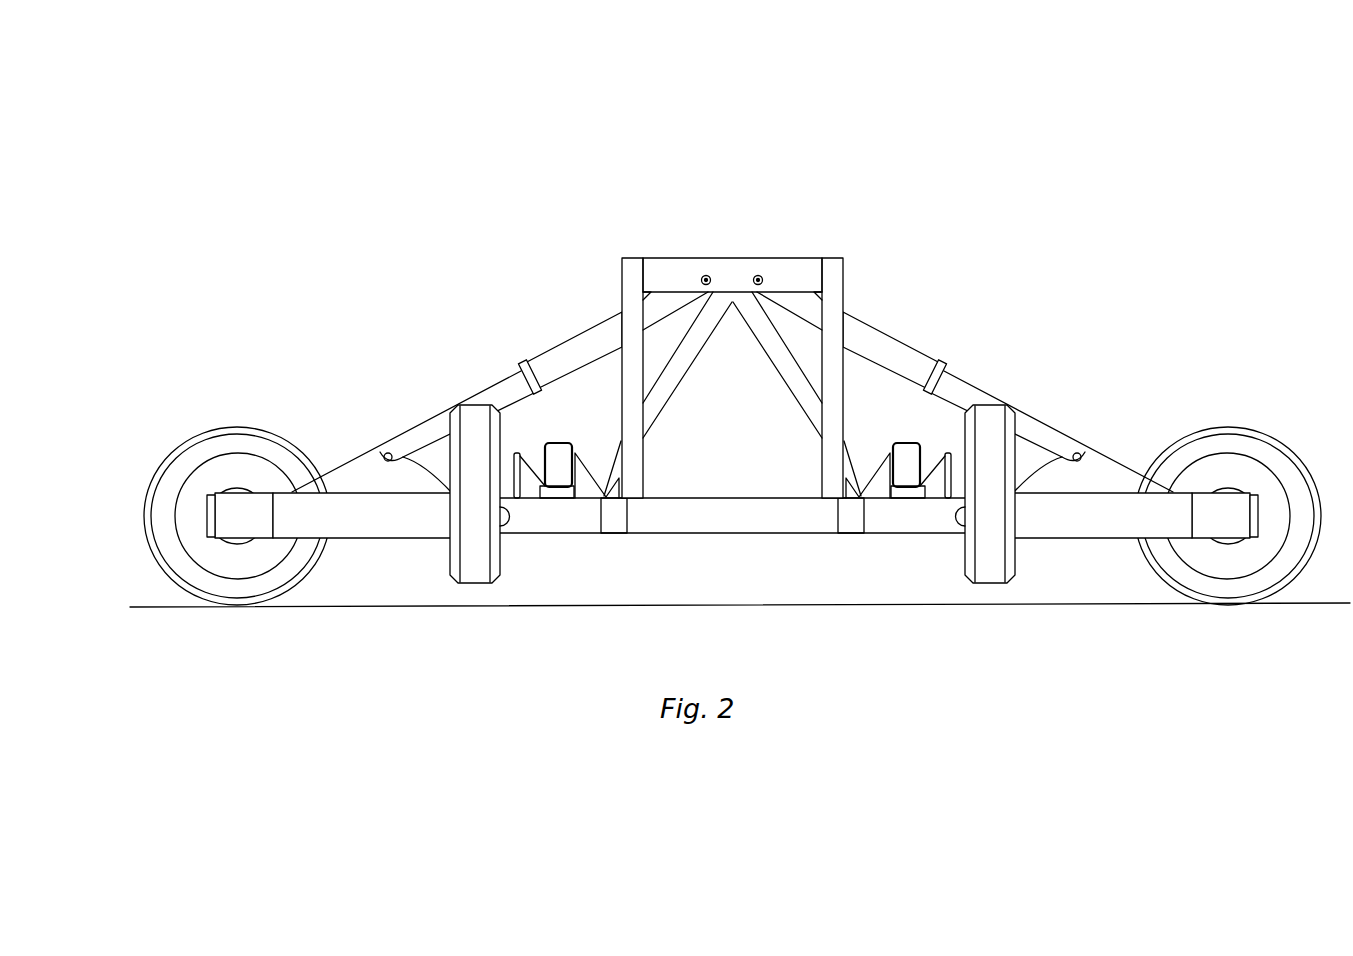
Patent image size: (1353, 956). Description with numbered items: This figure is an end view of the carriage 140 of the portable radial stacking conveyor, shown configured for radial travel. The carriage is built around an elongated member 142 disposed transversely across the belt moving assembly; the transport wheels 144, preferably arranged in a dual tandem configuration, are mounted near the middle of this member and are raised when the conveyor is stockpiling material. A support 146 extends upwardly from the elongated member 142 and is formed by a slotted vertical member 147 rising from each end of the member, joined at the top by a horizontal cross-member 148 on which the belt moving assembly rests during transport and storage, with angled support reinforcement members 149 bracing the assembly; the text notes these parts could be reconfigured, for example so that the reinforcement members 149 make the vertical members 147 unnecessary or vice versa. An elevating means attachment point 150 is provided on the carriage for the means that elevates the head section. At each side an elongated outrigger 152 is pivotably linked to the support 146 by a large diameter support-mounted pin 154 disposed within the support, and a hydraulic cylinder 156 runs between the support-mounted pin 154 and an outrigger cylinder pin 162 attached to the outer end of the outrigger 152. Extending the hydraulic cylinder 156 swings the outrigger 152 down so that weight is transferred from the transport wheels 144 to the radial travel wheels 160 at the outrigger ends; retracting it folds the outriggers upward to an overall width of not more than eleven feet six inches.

The carriage 140 is at (889, 177).
The elongated member 142 is at (702, 535).
The transport wheels 144 is at (468, 402).
The support 146 is at (678, 257).
The slotted vertical member 147 is at (620, 276).
The horizontal cross-member 148 is at (803, 279).
The angled support reinforcement members 149 is at (681, 384).
The elevating means attachment point 150 is at (613, 535).
The elongated outrigger 152 is at (413, 540).
The support-mounted pin 154 is at (708, 274).
The hydraulic cylinder 156 is at (559, 343).
The radial travel wheels 160 is at (225, 428).
The outrigger cylinder pin 162 is at (389, 450).